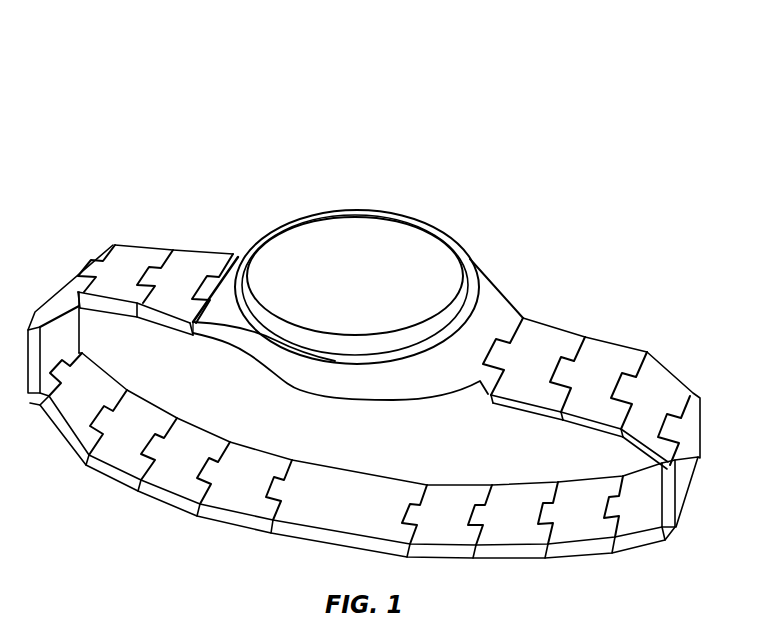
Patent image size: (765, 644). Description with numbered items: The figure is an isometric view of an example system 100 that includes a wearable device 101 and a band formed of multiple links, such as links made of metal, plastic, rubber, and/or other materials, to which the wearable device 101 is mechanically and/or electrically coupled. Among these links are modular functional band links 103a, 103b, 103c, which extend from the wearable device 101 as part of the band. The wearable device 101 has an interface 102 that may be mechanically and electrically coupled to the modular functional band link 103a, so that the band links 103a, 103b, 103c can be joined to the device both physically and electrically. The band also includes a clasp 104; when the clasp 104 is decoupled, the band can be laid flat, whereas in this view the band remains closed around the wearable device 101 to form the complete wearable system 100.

The system 100 is at (560, 78).
The wearable device 101 is at (402, 215).
The interface 102 is at (523, 314).
The modular functional band link 103a is at (555, 323).
The modular functional band link 103b is at (611, 330).
The modular functional band link 103c is at (688, 378).
The clasp 104 is at (357, 475).